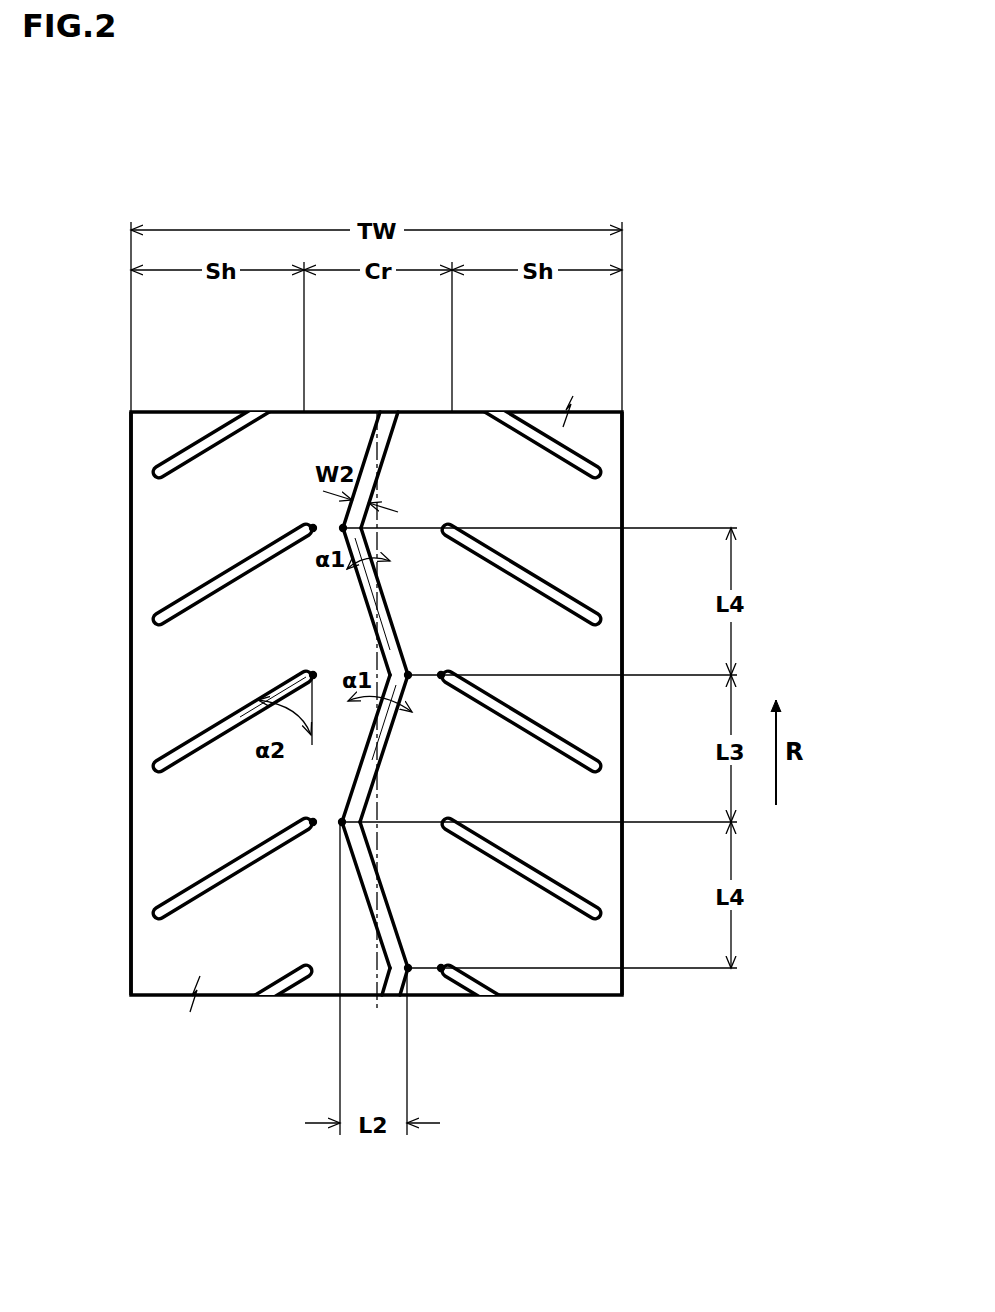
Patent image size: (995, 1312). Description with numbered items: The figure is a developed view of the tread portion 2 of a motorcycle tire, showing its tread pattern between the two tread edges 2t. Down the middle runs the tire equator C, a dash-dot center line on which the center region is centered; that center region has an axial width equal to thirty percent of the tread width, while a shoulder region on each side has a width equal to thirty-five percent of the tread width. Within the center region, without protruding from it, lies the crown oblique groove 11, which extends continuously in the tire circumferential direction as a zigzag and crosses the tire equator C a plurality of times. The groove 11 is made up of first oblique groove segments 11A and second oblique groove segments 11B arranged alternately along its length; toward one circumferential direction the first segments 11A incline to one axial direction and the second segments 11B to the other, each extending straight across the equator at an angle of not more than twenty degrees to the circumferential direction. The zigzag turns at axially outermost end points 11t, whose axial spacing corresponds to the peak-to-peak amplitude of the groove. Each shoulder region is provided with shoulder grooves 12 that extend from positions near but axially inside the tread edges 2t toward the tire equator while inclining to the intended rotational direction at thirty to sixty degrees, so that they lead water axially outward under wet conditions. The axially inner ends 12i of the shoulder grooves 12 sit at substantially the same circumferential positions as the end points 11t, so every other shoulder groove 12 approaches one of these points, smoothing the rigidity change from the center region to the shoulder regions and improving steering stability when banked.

The tread portion 2 is at (587, 508).
The tread edges 2t is at (131, 428).
The crown oblique groove 11 is at (471, 699).
The first oblique groove segments 11A is at (367, 453).
The second oblique groove segments 11B is at (391, 616).
The axially outermost end points 11t is at (343, 528).
The shoulder grooves 12 is at (178, 463).
The axially inner ends 12i is at (312, 527).
The tire equator C is at (377, 412).